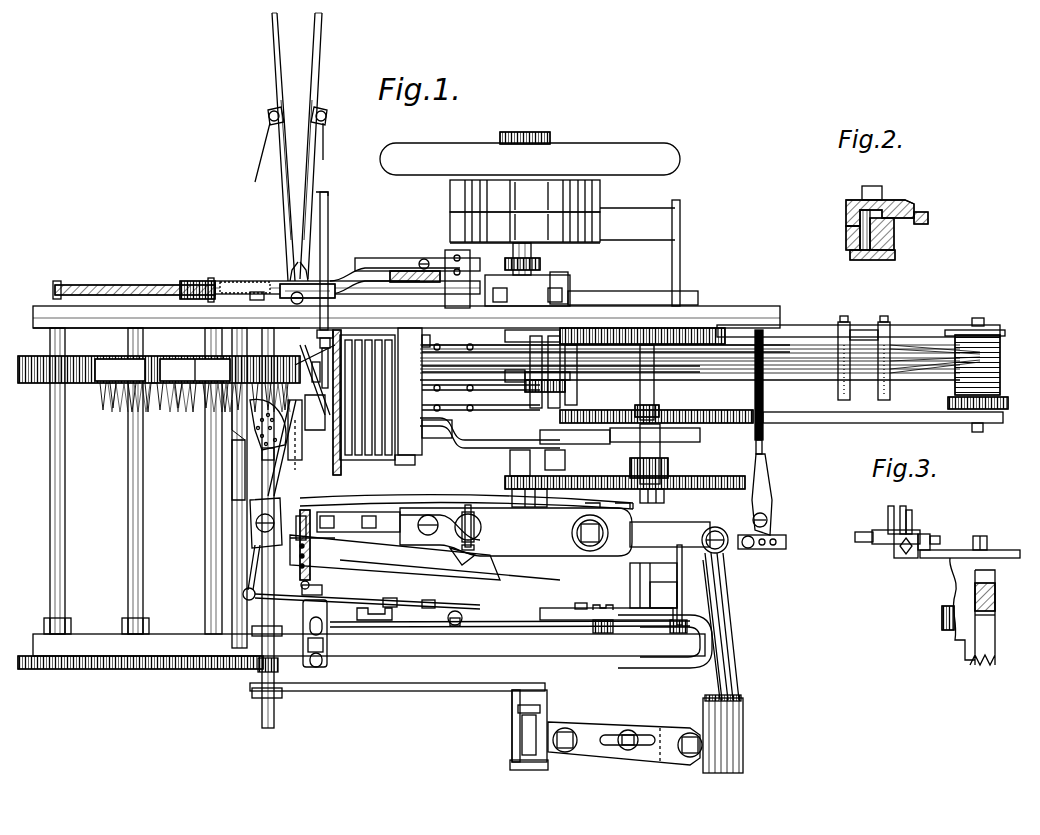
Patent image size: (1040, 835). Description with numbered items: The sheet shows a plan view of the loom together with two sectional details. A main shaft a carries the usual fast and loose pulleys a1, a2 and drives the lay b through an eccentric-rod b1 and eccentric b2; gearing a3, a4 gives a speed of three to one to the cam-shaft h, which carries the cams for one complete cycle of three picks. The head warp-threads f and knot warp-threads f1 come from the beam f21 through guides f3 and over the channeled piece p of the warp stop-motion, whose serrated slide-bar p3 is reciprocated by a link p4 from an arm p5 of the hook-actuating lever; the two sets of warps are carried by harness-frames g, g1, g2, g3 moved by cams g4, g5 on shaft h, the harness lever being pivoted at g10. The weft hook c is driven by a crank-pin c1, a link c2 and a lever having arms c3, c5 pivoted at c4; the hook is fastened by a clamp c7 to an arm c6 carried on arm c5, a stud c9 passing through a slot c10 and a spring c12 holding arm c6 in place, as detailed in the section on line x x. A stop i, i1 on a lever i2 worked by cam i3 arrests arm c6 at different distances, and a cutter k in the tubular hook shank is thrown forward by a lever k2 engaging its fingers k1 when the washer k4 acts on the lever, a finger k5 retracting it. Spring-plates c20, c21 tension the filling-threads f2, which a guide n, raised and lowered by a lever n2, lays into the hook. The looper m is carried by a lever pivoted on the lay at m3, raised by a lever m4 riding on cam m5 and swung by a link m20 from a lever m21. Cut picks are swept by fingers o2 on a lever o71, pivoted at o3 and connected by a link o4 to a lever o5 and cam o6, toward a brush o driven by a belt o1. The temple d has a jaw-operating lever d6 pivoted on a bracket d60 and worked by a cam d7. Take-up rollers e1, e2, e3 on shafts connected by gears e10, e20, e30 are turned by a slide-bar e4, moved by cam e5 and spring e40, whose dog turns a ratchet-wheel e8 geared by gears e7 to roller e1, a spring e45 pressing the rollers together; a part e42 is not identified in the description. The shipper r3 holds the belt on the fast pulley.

In FIG. 1, the main shaft a is at (520, 260).
In FIG. 1, the fast pulley a1 is at (525, 227).
In FIG. 1, the loose pulley a2 is at (525, 196).
In FIG. 1, the gearing a3 is at (495, 478).
In FIG. 1, the gearing a4 is at (636, 468).
In FIG. 1, the lay b is at (322, 366).
In FIG. 1, the eccentric-rod b1 is at (422, 380).
In FIG. 1, the eccentric b2 is at (575, 378).
In FIG. 1, the hook c is at (275, 495).
In FIG. 3, the hook c is at (880, 530).
In FIG. 1, the crank-pin c1 is at (515, 716).
In FIG. 1, the link c2 is at (620, 735).
In FIG. 1, the arm of lever c3 is at (737, 636).
In FIG. 1, the pivot c4 is at (718, 528).
In FIG. 1, the arm of lever c5 is at (670, 534).
In FIG. 2, the arm of lever c5 is at (846, 236).
In FIG. 1, the arm c6 is at (516, 529).
In FIG. 2, the arm c6 is at (928, 218).
In FIG. 3, the arm c6 is at (904, 558).
In FIG. 1, the clamp c7 is at (358, 521).
In FIG. 3, the clamp c7 is at (898, 548).
In FIG. 2, the stud c9 is at (886, 256).
In FIG. 2, the slot c10 is at (900, 226).
In FIG. 1, the spring c12 is at (430, 498).
In FIG. 1, the spring-plate c20 is at (318, 416).
In FIG. 1, the spring-plate c21 is at (255, 440).
In FIG. 1, the temple d is at (305, 402).
In FIG. 1, the temple-jaw-operating lever d6 is at (448, 462).
In FIG. 1, the cam d7 is at (565, 458).
In FIG. 1, the bracket d60 is at (425, 426).
In FIG. 1, the take-up roller e1 is at (200, 360).
In FIG. 1, the take-up roller e2 is at (118, 357).
In FIG. 1, the take-up roller e3 is at (80, 384).
In FIG. 1, the slide-bar e4 is at (240, 284).
In FIG. 1, the cam e5 is at (528, 275).
In FIG. 1, the gears e7 is at (166, 316).
In FIG. 1, the ratchet-wheel e8 is at (196, 286).
In FIG. 1, the gear e10 is at (212, 668).
In FIG. 1, the gear e20 is at (135, 668).
In FIG. 1, the gear e30 is at (38, 668).
In FIG. 1, the spring e40 is at (372, 274).
In FIG. 1, the post e42 is at (205, 626).
In FIG. 1, the spring e45 is at (97, 287).
In FIG. 1, the head warp-threads f is at (700, 355).
In FIG. 1, the knot warp-threads f1 is at (690, 386).
In FIG. 1, the filling-threads f2 is at (298, 238).
In FIG. 1, the guides f3 is at (848, 386).
In FIG. 1, the beam f21 is at (985, 363).
In FIG. 1, the harness-frame g is at (385, 340).
In FIG. 1, the harness-frame g1 is at (375, 460).
In FIG. 1, the harness-frame g2 is at (358, 460).
In FIG. 1, the harness-frame g3 is at (350, 340).
In FIG. 1, the cam g4 is at (615, 324).
In FIG. 1, the cam g5 is at (700, 416).
In FIG. 1, the pivot g10 is at (565, 421).
In FIG. 1, the cam-shaft h is at (638, 382).
In FIG. 1, the stop i is at (315, 588).
In FIG. 3, the stop i is at (920, 558).
In FIG. 1, the stop i1 is at (322, 604).
In FIG. 3, the stop i1 is at (940, 540).
In FIG. 1, the lever i2 is at (468, 627).
In FIG. 3, the lever i2 is at (955, 630).
In FIG. 1, the cam i3 is at (678, 648).
In FIG. 1, the cutter k is at (292, 549).
In FIG. 3, the cutter k is at (862, 542).
In FIG. 1, the fingers k1 is at (292, 542).
In FIG. 3, the fingers k1 is at (910, 516).
In FIG. 1, the lever k2 is at (425, 556).
In FIG. 2, the lever k2 is at (905, 200).
In FIG. 3, the lever k2 is at (897, 513).
In FIG. 1, the washer k4 is at (477, 525).
In FIG. 2, the washer k4 is at (848, 208).
In FIG. 1, the finger k5 is at (455, 552).
In FIG. 2, the finger k5 is at (916, 208).
In FIG. 1, the looping device m is at (250, 432).
In FIG. 1, the pivot m3 is at (656, 585).
In FIG. 1, the lever m4 is at (575, 436).
In FIG. 1, the cam m5 is at (655, 454).
In FIG. 1, the link m20 is at (324, 540).
In FIG. 1, the lever m21 is at (373, 564).
In FIG. 1, the guide n is at (326, 290).
In FIG. 1, the lever n2 is at (416, 384).
In FIG. 1, the rotating brush o is at (240, 440).
In FIG. 1, the belt o1 is at (415, 684).
In FIG. 1, the fingers o2 is at (232, 412).
In FIG. 1, the pivot o3 is at (266, 522).
In FIG. 1, the link o4 is at (451, 612).
In FIG. 1, the lever o5 is at (617, 618).
In FIG. 1, the cam o6 is at (660, 620).
In FIG. 1, the lever o71 is at (252, 558).
In FIG. 1, the channeled piece p is at (748, 385).
In FIG. 1, the slide-bar p3 is at (764, 428).
In FIG. 1, the link p4 is at (763, 480).
In FIG. 1, the arm p5 is at (752, 548).
In FIG. 1, the shipper r3 is at (680, 265).
In FIG. 1, the section line x is at (466, 530).